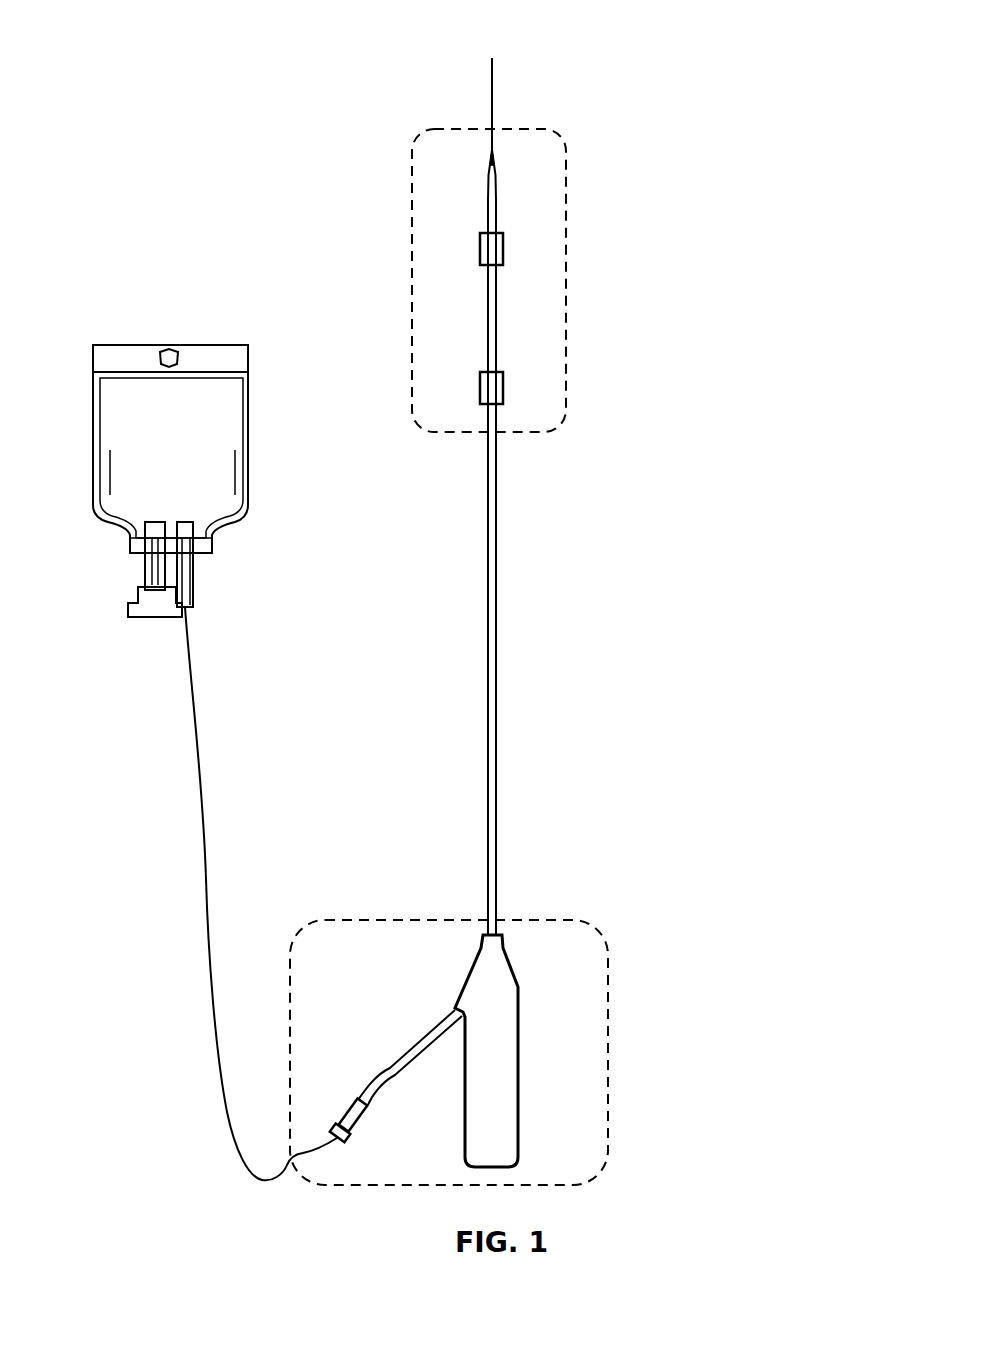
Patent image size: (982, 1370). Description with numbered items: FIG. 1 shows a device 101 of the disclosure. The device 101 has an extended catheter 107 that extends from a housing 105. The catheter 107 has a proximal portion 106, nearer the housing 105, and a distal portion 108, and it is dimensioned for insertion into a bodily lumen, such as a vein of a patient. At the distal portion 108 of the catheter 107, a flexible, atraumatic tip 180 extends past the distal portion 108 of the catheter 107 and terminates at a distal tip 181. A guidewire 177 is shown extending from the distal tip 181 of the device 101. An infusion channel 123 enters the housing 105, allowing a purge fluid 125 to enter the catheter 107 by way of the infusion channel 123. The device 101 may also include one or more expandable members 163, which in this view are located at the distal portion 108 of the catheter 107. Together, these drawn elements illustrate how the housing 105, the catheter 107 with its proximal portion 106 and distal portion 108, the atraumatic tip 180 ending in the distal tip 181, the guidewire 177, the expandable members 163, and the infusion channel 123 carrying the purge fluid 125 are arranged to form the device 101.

The device 101 is at (563, 107).
The housing 105 is at (518, 992).
The proximal portion 106 is at (583, 845).
The catheter 107 is at (603, 716).
The distal portion 108 is at (553, 231).
The infusion channel 123 is at (390, 1068).
The purge fluid 125 is at (182, 470).
The expandable member 163 is at (480, 378).
The guidewire 177 is at (492, 82).
The atraumatic tip 180 is at (490, 168).
The distal tip 181 is at (517, 158).